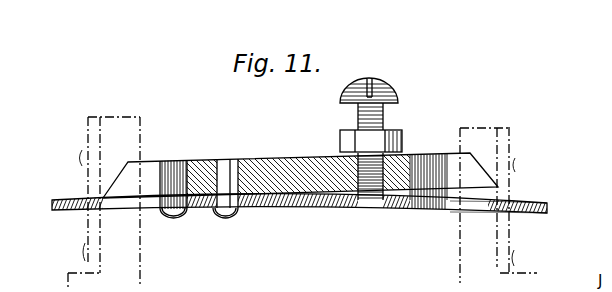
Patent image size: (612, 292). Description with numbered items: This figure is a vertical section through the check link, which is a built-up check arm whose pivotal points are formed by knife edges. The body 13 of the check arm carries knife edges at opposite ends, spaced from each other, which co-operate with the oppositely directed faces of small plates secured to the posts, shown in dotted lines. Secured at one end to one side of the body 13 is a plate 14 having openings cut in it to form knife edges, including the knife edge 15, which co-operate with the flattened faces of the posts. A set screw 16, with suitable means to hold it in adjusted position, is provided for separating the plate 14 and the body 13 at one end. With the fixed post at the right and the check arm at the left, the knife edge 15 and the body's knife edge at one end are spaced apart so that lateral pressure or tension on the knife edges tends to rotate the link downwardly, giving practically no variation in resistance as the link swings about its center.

The body of the check arm 13 is at (282, 162).
The plate 14 is at (322, 200).
The knife edge 15 is at (488, 208).
The set screw 16 is at (386, 123).